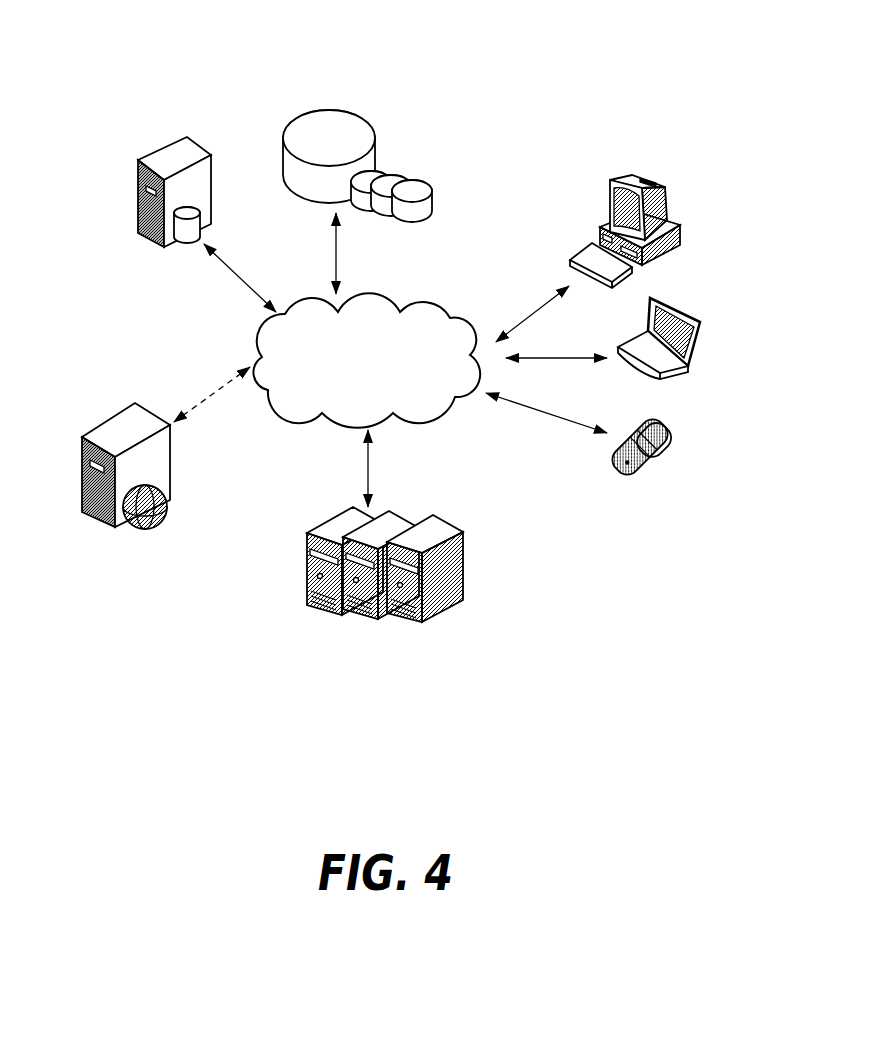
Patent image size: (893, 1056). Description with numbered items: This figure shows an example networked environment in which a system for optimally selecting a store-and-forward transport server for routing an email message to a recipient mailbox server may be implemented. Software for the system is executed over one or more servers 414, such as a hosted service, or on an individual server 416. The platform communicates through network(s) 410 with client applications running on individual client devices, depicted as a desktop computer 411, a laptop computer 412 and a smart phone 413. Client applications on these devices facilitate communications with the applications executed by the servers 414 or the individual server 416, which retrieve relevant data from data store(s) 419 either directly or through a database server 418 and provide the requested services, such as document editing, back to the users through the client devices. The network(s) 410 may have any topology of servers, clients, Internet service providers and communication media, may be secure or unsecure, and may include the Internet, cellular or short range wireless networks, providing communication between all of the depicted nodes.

The network(s) 410 is at (374, 284).
The desktop computer 411 is at (668, 166).
The laptop computer 412 is at (701, 296).
The smart phone 413 is at (669, 412).
The servers 414 is at (330, 507).
The individual server 416 is at (103, 414).
The database server 418 is at (176, 254).
The data store(s) 419 is at (346, 91).